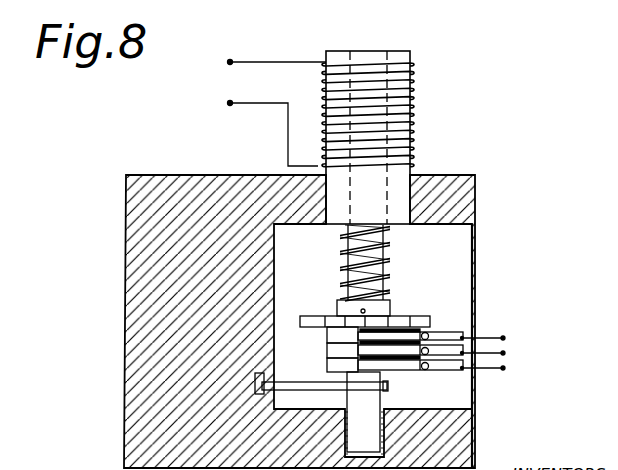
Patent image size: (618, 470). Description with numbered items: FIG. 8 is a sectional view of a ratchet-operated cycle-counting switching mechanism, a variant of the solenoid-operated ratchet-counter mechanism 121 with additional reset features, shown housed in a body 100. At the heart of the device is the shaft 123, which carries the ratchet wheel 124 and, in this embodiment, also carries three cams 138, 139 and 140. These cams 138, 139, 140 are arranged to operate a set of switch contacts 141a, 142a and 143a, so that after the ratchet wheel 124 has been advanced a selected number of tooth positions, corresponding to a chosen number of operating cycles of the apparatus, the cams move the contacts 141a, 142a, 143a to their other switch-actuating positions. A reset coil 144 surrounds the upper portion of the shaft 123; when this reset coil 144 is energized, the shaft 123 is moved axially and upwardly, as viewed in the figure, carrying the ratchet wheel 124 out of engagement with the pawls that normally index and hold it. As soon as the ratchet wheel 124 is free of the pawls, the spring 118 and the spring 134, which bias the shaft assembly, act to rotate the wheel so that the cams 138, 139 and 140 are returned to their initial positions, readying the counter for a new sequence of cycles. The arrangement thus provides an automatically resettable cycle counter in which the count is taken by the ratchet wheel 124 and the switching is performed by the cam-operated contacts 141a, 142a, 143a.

The housing 100 is at (137, 370).
The solenoid-operated ratchet-counter mechanism 121 is at (198, 150).
The reset coil 144 is at (416, 130).
The spring 118 is at (343, 254).
The shaft 123 is at (392, 234).
The ratchet wheel 124 is at (413, 319).
The cam 138 is at (340, 340).
The cam 139 is at (340, 352).
The cam 140 is at (340, 366).
The switch contact 141a is at (449, 333).
The switch contact 142a is at (411, 347).
The switch contact 143a is at (391, 365).
The spring 134 is at (283, 386).